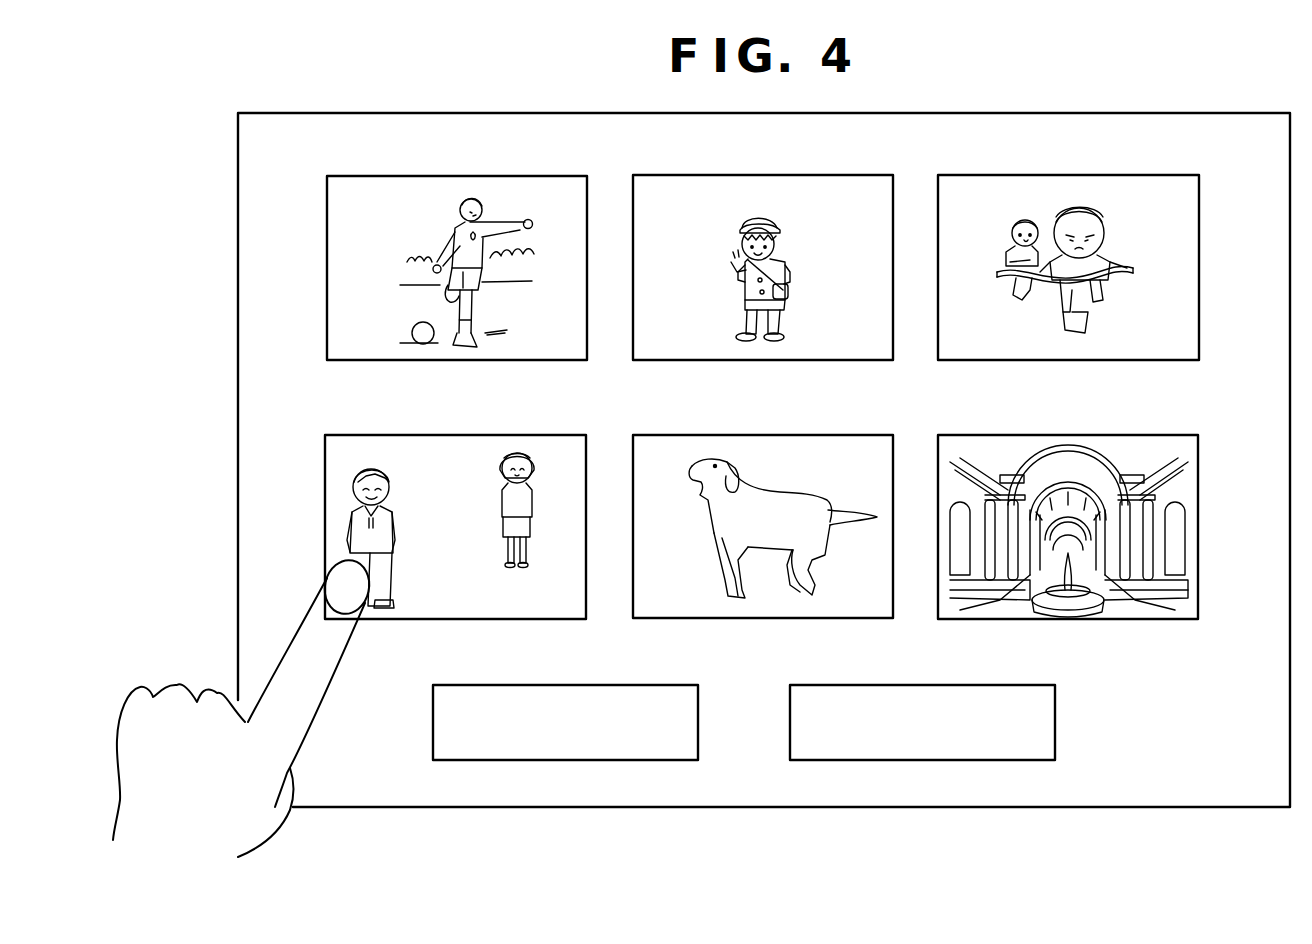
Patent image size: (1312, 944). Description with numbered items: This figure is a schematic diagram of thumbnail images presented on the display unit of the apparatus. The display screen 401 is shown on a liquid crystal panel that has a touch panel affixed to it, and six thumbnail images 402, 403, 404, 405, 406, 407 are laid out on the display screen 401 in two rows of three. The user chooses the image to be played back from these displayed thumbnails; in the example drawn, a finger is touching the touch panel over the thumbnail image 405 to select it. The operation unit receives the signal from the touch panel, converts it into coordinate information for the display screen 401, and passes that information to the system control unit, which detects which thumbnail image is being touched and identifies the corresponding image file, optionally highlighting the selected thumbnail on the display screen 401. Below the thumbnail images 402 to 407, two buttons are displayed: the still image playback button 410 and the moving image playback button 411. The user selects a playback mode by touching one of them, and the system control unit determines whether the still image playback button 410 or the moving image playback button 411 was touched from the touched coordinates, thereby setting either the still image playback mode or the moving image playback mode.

The display screen 401 is at (1215, 113).
The thumbnail image 402 is at (522, 175).
The thumbnail image 403 is at (828, 175).
The thumbnail image 404 is at (1133, 175).
The thumbnail image 405 is at (522, 435).
The thumbnail image 406 is at (828, 435).
The thumbnail image 407 is at (1133, 435).
The still image playback button 410 is at (617, 685).
The moving image playback button 411 is at (975, 685).